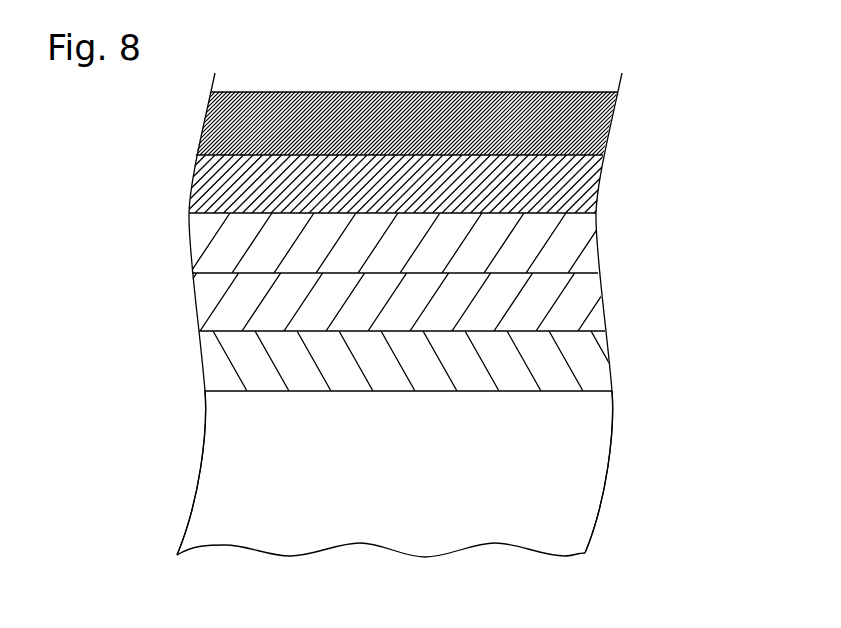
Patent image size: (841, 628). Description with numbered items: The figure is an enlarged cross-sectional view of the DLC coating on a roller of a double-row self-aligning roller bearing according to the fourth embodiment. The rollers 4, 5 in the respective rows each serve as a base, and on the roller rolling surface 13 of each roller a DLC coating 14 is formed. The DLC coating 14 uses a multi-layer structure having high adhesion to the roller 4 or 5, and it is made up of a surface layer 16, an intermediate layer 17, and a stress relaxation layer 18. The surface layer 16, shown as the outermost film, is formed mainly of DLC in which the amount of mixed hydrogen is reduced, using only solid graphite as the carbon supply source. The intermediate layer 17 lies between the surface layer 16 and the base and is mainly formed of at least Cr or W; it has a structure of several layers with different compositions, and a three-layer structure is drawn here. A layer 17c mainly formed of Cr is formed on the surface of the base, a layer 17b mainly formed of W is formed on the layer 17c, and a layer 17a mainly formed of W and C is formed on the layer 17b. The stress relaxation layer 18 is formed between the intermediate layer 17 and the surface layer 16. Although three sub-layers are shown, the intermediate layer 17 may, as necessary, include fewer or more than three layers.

The roller 4 is at (445, 474).
The roller 5 is at (590, 460).
The roller rolling surface 13 is at (296, 390).
The DLC coating 14 is at (480, 201).
The surface layer 16 is at (610, 120).
The intermediate layer 17 is at (458, 302).
The layer mainly formed of W and C 17a is at (590, 247).
The layer mainly formed of W 17b is at (592, 300).
The layer mainly formed of Cr 17c is at (443, 349).
The stress relaxation layer 18 is at (590, 178).